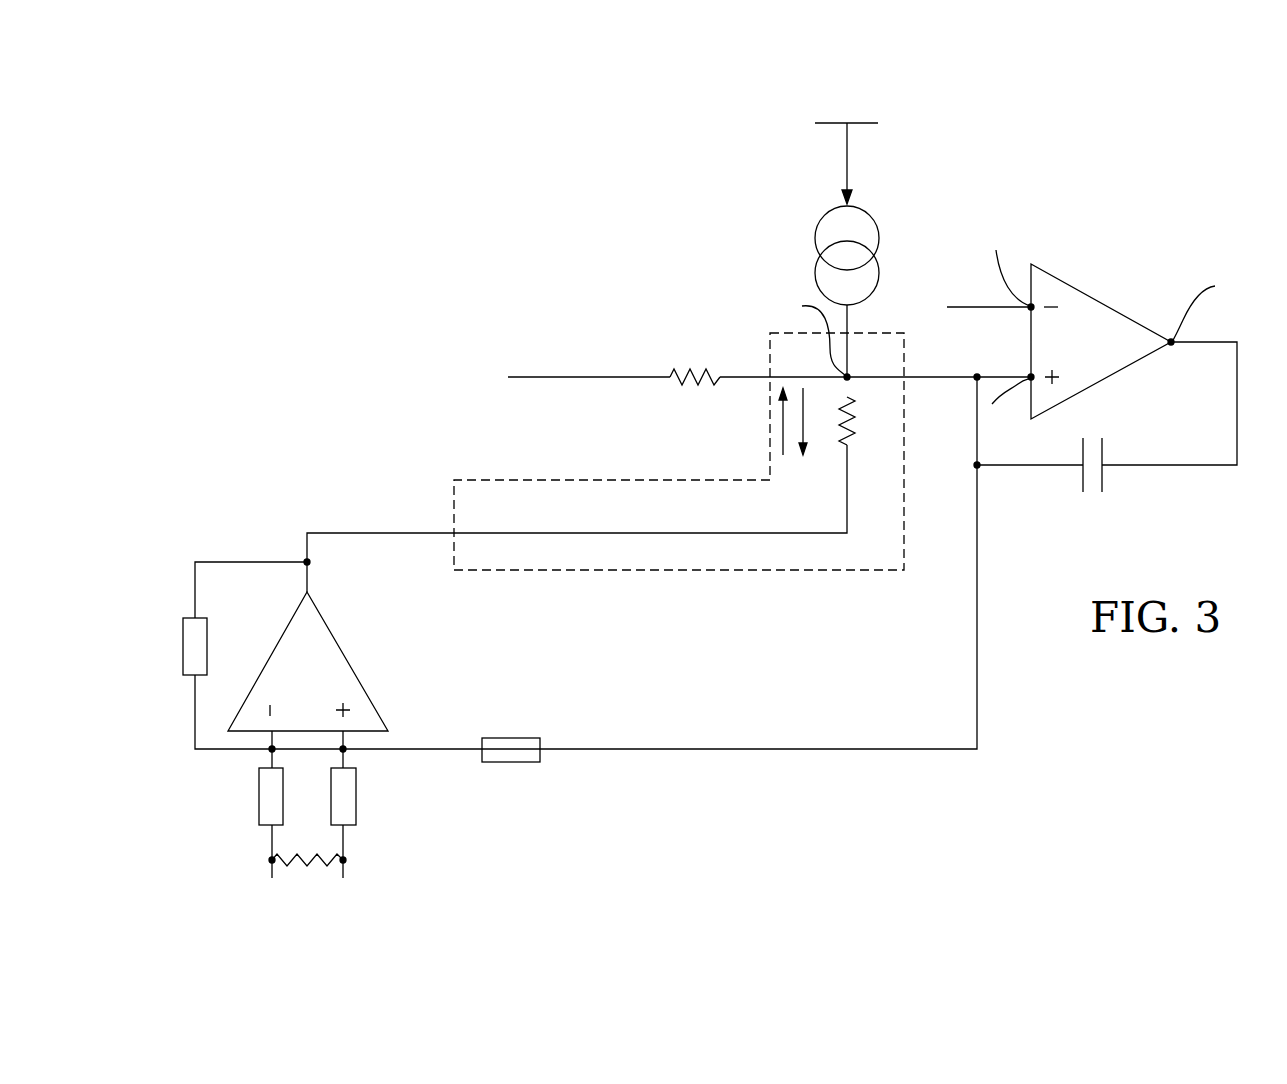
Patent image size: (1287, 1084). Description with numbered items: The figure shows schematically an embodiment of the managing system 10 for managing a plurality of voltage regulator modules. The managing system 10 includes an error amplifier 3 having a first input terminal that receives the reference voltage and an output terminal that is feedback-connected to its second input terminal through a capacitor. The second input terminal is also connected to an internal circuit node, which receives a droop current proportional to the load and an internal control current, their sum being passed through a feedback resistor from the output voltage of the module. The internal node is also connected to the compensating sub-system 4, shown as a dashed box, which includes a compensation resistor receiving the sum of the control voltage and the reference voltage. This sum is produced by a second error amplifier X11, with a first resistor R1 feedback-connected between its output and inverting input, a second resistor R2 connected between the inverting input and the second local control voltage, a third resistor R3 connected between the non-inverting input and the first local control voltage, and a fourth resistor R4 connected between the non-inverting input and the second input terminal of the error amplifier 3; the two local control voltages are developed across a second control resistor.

The managing system 10 is at (563, 254).
The error amplifier 3 is at (1078, 318).
The compensating sub-system 4 is at (883, 533).
The error amplifier X11 is at (320, 645).
The first resistor R1 is at (192, 650).
The second resistor R2 is at (267, 785).
The third resistor R3 is at (347, 785).
The fourth resistor R4 is at (510, 748).